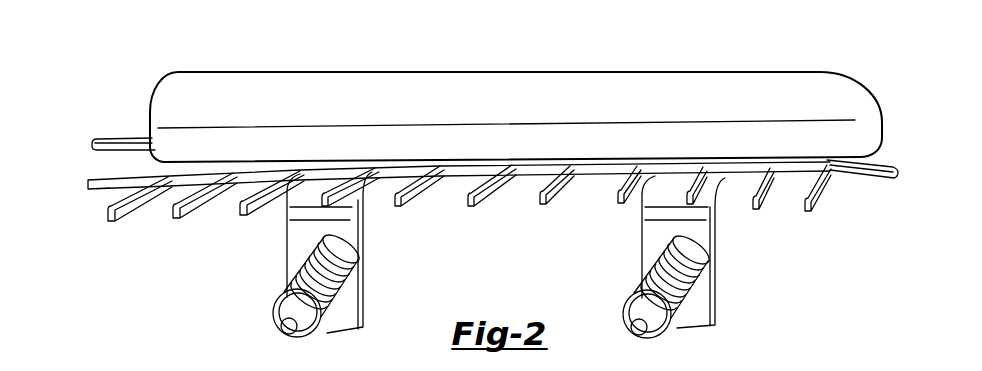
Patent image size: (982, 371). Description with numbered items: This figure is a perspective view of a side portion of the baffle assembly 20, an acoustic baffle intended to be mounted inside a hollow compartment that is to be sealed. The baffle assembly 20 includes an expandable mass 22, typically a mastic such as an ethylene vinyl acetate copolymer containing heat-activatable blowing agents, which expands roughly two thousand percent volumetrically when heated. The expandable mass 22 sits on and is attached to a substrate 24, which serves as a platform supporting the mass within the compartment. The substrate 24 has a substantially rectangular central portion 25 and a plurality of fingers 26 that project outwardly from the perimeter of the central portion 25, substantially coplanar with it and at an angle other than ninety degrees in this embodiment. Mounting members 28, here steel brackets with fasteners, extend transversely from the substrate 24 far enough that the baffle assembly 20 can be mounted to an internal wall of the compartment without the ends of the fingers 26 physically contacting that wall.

The baffle assembly 20 is at (474, 238).
The expandable mass 22 is at (856, 79).
The substrate 24 is at (447, 173).
The central portion 25 is at (522, 171).
The fingers 26 is at (98, 191).
The mounting members 28 is at (287, 257).